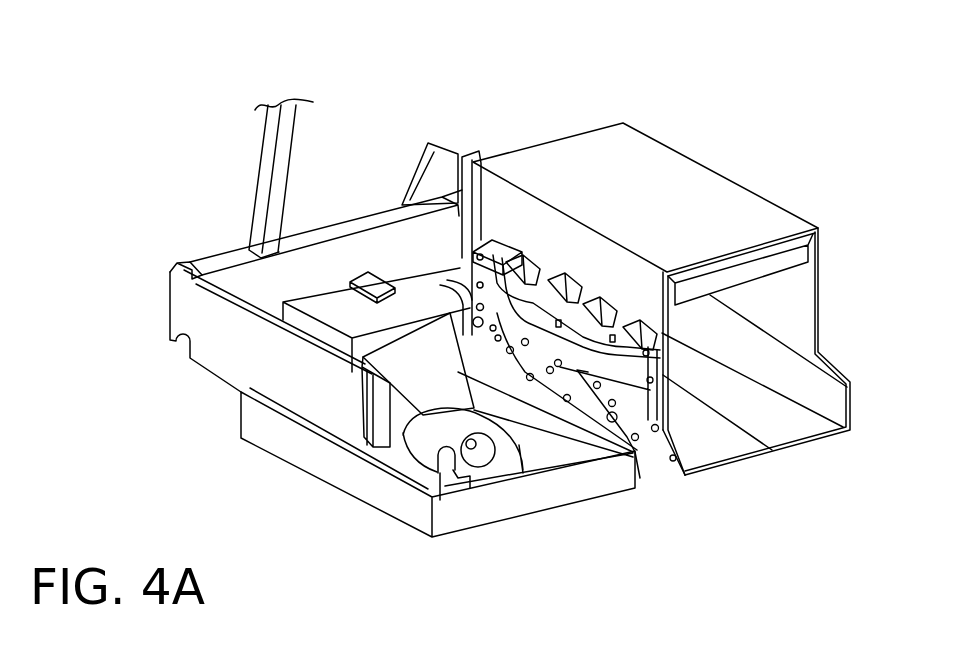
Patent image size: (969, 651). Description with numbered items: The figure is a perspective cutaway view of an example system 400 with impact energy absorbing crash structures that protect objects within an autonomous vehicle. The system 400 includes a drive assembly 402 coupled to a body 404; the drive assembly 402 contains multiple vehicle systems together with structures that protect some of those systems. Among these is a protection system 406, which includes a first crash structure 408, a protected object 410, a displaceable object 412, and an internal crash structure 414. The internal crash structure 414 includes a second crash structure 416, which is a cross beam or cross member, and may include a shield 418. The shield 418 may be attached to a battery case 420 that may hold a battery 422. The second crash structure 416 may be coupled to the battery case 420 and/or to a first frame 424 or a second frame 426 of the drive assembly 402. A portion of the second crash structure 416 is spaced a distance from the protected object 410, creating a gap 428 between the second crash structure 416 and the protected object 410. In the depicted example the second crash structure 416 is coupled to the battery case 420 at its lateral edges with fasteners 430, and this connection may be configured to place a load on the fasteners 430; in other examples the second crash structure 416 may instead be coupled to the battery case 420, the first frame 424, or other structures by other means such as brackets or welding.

The system 400 is at (130, 75).
The drive assembly 402 is at (387, 48).
The body 404 is at (292, 102).
The protection system 406 is at (636, 569).
The first crash structure 408 is at (186, 262).
The protected object 410 is at (659, 57).
The displaceable object 412 is at (353, 326).
The internal crash structure 414 is at (782, 526).
The second crash structure 416 is at (500, 283).
The shield 418 is at (637, 395).
The battery case 420 is at (648, 153).
The battery 422 is at (758, 267).
The first frame 424 is at (387, 242).
The second frame 426 is at (495, 513).
The gap 428 is at (640, 463).
The fasteners 430 is at (772, 450).